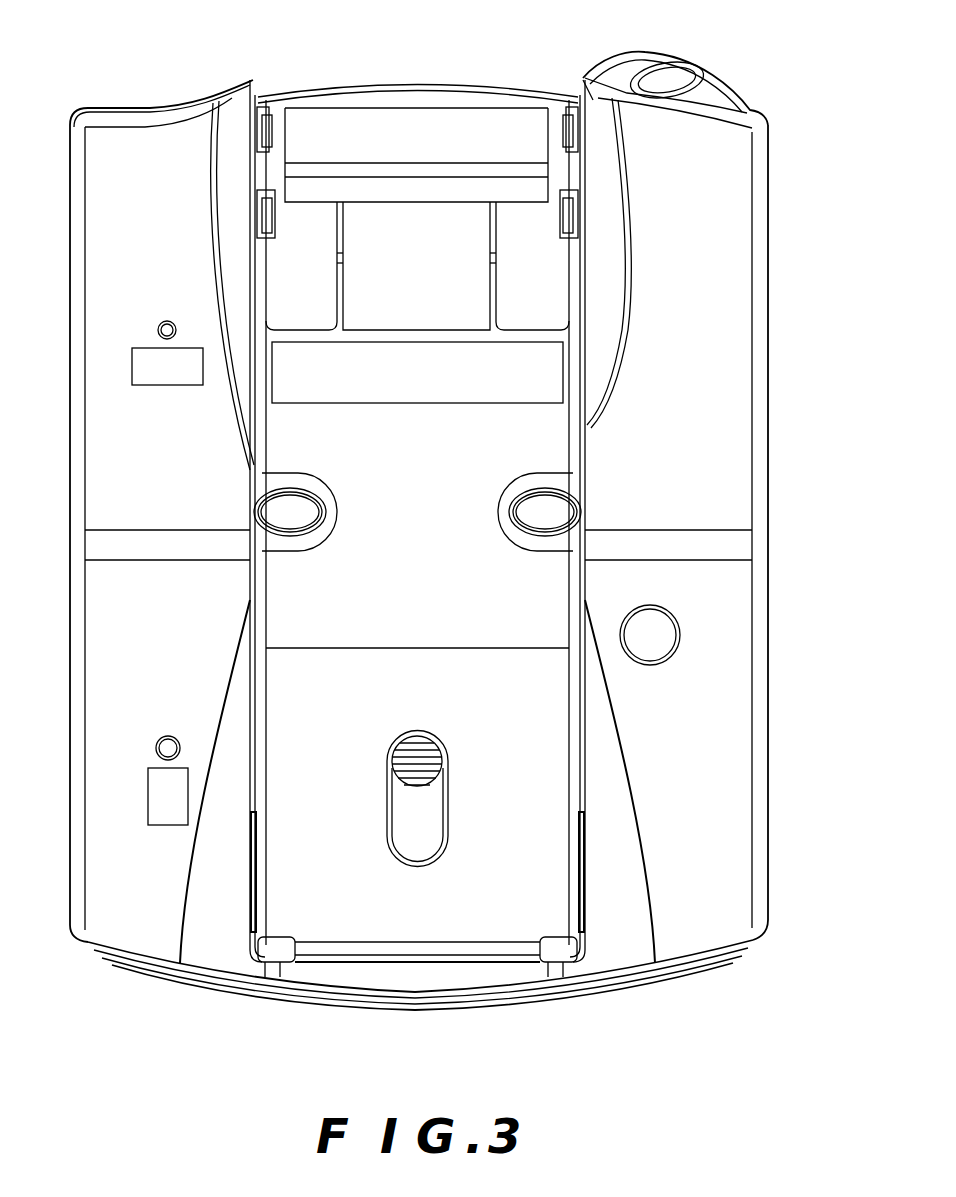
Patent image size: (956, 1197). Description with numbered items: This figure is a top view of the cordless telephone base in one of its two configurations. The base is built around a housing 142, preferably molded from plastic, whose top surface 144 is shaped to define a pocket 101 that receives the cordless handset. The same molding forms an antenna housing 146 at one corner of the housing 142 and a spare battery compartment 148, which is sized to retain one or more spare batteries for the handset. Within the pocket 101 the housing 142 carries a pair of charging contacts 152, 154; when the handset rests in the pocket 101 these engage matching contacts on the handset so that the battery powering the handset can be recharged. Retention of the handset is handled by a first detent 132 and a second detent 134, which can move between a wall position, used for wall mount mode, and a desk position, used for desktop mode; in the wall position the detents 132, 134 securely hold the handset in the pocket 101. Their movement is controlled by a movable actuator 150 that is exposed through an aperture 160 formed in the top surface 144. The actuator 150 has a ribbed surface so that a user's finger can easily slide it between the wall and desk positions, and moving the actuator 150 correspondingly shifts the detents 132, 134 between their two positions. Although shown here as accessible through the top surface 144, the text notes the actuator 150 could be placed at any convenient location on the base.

The pocket 101 is at (282, 601).
The first detent 132 is at (256, 907).
The second detent 134 is at (579, 907).
The housing 142 is at (770, 920).
The top surface 144 is at (733, 848).
The antenna housing 146 is at (665, 77).
The spare battery compartment 148 is at (409, 306).
The movable actuator 150 is at (432, 742).
The charging contact 152 is at (290, 940).
The charging contact 154 is at (548, 940).
The aperture 160 is at (432, 833).